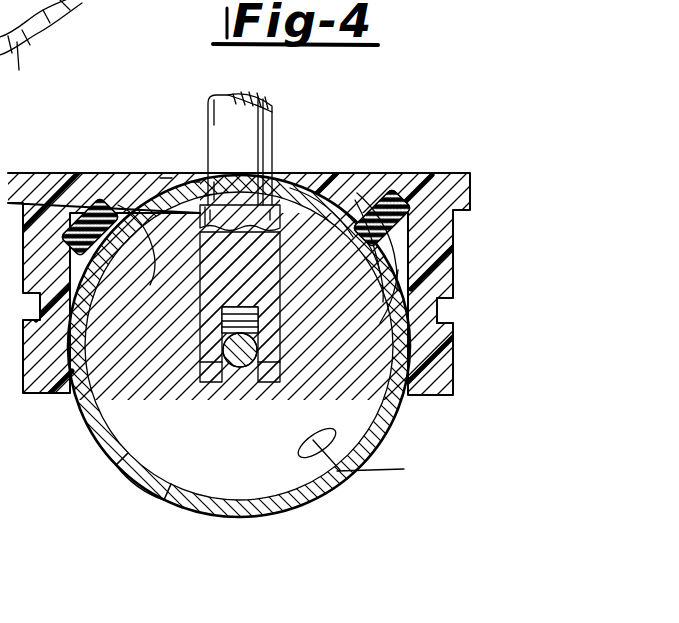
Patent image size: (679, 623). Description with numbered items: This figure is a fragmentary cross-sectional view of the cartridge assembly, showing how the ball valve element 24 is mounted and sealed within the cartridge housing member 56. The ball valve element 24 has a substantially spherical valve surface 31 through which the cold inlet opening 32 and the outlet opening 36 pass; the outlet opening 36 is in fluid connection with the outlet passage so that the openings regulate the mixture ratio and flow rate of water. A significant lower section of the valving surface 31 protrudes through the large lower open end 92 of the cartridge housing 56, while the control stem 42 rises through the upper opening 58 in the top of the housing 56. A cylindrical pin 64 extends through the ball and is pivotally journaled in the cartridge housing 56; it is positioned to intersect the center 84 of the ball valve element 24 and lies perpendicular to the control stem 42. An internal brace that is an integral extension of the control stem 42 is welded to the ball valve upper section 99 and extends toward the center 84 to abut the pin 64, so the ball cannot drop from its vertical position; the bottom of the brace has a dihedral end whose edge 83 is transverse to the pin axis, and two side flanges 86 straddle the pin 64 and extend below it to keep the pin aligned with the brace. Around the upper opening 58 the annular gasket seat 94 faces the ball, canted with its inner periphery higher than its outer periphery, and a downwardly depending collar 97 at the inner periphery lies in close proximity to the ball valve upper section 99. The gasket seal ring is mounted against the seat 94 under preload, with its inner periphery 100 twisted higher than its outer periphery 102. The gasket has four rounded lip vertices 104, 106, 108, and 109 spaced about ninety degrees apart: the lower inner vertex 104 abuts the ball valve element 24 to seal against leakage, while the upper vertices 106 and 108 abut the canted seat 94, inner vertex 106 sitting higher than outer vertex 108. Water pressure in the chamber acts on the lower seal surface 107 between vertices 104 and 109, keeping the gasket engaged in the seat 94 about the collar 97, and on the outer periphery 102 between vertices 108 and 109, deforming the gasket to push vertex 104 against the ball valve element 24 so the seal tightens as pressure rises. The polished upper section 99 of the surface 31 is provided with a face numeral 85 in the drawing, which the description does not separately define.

The ball valve element 24 is at (352, 498).
The spherical valve surface 31 is at (290, 517).
The cold inlet opening 32 is at (17, 42).
The outlet opening 36 is at (41, 69).
The control stem 42 is at (250, 133).
The cartridge housing member 56 is at (453, 262).
The upper opening 58 is at (190, 182).
The pin 64 is at (238, 367).
The edge 83 is at (280, 297).
The center of ball valve 84 is at (262, 341).
The upper surface 85 is at (167, 177).
The side flanges 86 is at (200, 368).
The lower open end 92 is at (70, 397).
The annular gasket seat 94 is at (395, 195).
The shoulder or collar 97 is at (125, 202).
The ball valve upper section 99 is at (287, 192).
The inner periphery of gasket seal ring 100 is at (110, 280).
The outer periphery of gasket seal ring 102 is at (443, 301).
The vertex 104 is at (353, 237).
The vertex 106 is at (393, 200).
The lower seal surface 107 is at (380, 273).
The vertex 108 is at (412, 215).
The vertex 109 is at (380, 323).